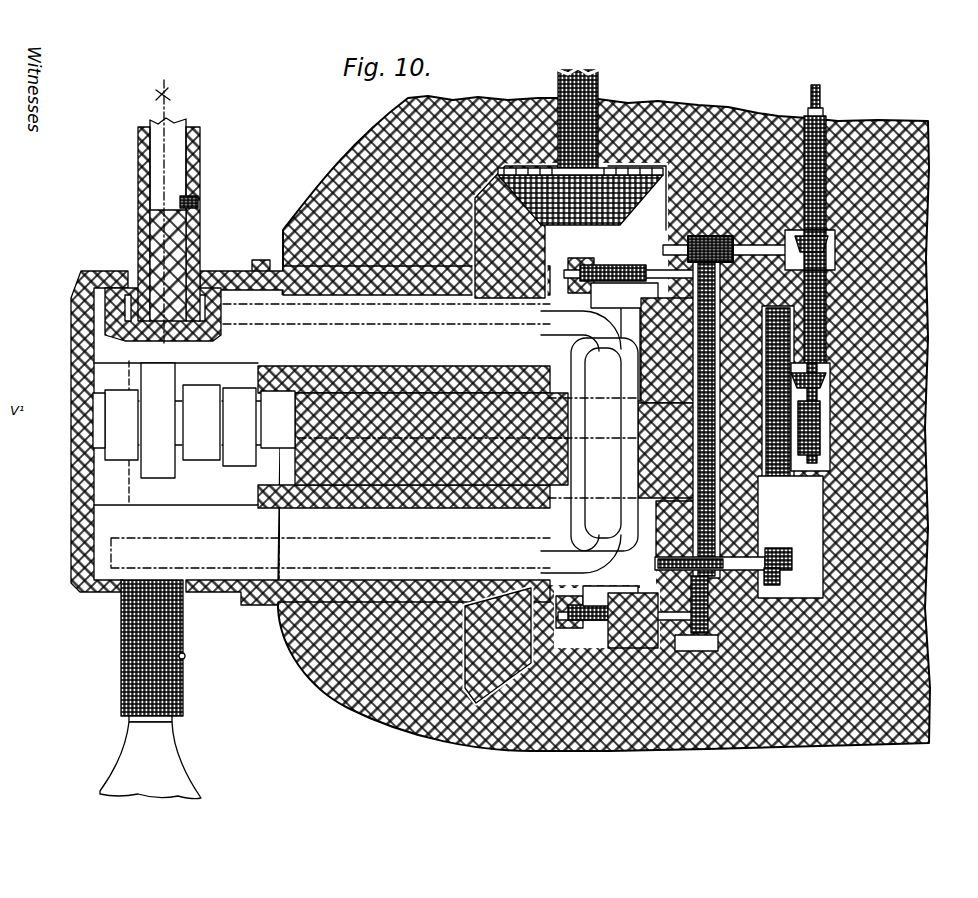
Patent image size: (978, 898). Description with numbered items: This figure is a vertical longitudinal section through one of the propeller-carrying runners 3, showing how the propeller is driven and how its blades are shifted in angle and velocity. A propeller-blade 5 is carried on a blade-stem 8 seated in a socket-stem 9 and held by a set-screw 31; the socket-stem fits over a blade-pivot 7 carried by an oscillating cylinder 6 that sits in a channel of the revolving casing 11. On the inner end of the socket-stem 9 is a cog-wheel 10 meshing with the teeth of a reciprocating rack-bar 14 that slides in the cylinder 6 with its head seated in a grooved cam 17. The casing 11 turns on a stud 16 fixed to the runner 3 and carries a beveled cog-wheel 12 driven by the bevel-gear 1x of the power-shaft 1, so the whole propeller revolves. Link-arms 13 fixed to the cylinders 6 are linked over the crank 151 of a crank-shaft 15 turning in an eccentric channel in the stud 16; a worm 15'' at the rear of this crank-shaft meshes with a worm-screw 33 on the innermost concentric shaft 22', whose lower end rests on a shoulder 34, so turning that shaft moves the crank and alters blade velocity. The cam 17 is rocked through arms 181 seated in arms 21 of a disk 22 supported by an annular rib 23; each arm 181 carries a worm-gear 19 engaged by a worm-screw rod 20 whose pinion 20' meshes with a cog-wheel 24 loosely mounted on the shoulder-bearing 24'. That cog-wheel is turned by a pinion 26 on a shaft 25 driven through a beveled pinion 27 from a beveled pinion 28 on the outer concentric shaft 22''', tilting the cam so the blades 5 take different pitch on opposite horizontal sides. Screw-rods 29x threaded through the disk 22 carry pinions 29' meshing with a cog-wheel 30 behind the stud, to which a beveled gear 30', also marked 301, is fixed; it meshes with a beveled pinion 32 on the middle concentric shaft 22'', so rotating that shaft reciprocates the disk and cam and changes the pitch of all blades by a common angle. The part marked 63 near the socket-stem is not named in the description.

The power-shaft 1 is at (578, 121).
The bevel-gear 1x is at (548, 160).
The central concentric shaft 22' is at (828, 214).
The central concentric shaft 22'' is at (841, 98).
The outer concentric shaft 22''' is at (859, 109).
The runner 3 is at (376, 166).
The propeller-blade 5 is at (150, 760).
The oscillating cylinder 6 is at (331, 436).
The blade-pivot 7 is at (215, 235).
The blade-stem 8 is at (157, 407).
The socket-stem 9 is at (128, 168).
The cog-wheel 10 is at (254, 256).
The revolving casing 11 is at (236, 629).
The beveled cog-wheel 12 is at (551, 434).
The link-arm 13 is at (367, 432).
The reciprocating rack-bar 14 is at (581, 442).
The crank-shaft 15 is at (876, 428).
The crank 151 is at (88, 412).
The worm 15'' is at (891, 445).
The stud 16 is at (431, 439).
The grooved cam 17 is at (593, 444).
The arm 181 is at (620, 444).
The worm-gear 19 is at (594, 258).
The worm-screw rod 20 is at (624, 453).
The pinion 20' is at (832, 461).
The disk arm 21 is at (569, 443).
The disk 22 is at (658, 473).
The annular rib 23 is at (660, 249).
The cog-wheel 24 is at (830, 455).
The shoulder-bearing 24' is at (785, 554).
The shaft 25 is at (660, 238).
The pinion 26 is at (704, 228).
The beveled pinion 27 is at (827, 255).
The beveled pinion 28 is at (822, 233).
The pinion 29' is at (816, 491).
The screw-rod 29x is at (786, 574).
The cog-wheel 30 is at (872, 463).
The beveled gear 30' is at (889, 415).
The beveled gear 301 is at (790, 500).
The set-screw 31 is at (191, 195).
The beveled pinion 32 is at (820, 386).
The worm-screw 33 is at (812, 451).
The shoulder 34 is at (800, 464).
The bearing block 63 is at (110, 262).